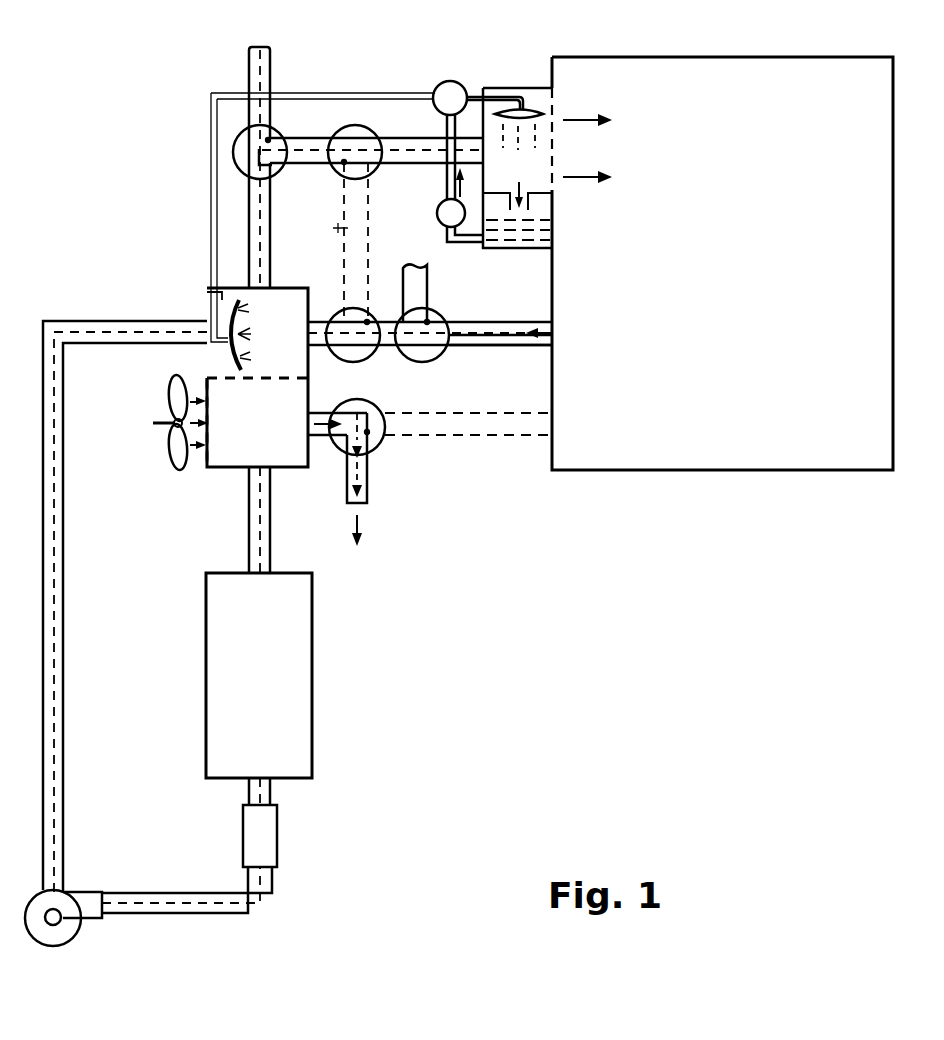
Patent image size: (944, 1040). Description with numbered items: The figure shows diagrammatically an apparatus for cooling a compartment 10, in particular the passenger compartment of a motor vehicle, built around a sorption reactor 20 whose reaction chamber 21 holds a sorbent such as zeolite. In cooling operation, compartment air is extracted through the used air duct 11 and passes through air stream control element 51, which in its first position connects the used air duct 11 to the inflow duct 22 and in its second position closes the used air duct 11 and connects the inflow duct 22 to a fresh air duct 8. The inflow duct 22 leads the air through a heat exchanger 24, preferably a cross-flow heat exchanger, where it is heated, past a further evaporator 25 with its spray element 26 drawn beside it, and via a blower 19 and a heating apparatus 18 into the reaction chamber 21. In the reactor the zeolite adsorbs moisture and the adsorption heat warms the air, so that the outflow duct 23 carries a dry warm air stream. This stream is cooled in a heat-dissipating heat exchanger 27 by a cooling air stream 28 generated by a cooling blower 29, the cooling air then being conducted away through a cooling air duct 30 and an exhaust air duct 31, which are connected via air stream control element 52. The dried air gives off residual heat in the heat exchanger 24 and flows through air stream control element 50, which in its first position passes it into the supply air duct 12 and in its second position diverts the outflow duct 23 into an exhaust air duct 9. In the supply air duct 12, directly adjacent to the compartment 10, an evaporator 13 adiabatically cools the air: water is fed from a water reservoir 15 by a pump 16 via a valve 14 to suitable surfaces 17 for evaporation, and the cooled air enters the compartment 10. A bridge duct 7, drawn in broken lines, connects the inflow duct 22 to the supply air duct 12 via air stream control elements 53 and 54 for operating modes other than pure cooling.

The bridge duct 7 is at (343, 228).
The fresh air duct 8 is at (427, 277).
The exhaust air duct 9 is at (255, 74).
The compartment 10 is at (725, 297).
The used air duct 11 is at (502, 346).
The supply air duct 12 is at (399, 165).
The evaporator 13 is at (540, 88).
The valve 14 is at (448, 80).
The water reservoir 15 is at (520, 246).
The pump 16 is at (437, 222).
The surfaces for evaporation 17 is at (525, 105).
The heating apparatus 18 is at (277, 865).
The blower 19 is at (63, 938).
The sorption reactor 20 is at (287, 675).
The reaction chamber 21 is at (270, 635).
The inflow duct 22 is at (97, 320).
The outflow duct 23 is at (249, 228).
The heat exchanger 24 is at (290, 348).
The further evaporator 25 is at (207, 290).
The nozzle 26 is at (228, 346).
The heat-dissipating heat exchanger 27 is at (278, 437).
The cooling air stream 28 is at (210, 452).
The cooling blower 29 is at (180, 462).
The cooling air duct 30 is at (312, 466).
The exhaust air duct 31 is at (368, 490).
The air stream control element 50 is at (233, 150).
The air stream control element 51 is at (432, 362).
The air stream control element 52 is at (380, 446).
The air stream control element 53 is at (352, 362).
The air stream control element 54 is at (355, 125).